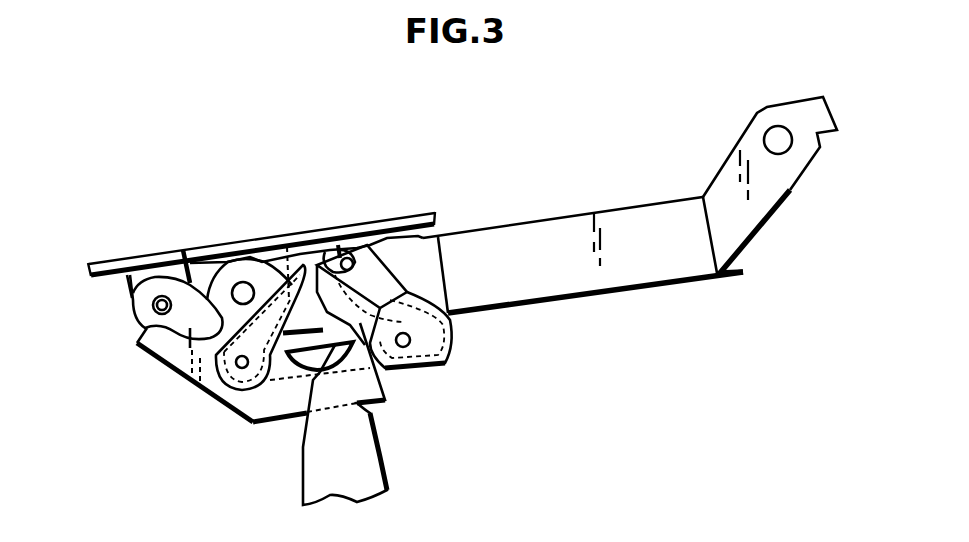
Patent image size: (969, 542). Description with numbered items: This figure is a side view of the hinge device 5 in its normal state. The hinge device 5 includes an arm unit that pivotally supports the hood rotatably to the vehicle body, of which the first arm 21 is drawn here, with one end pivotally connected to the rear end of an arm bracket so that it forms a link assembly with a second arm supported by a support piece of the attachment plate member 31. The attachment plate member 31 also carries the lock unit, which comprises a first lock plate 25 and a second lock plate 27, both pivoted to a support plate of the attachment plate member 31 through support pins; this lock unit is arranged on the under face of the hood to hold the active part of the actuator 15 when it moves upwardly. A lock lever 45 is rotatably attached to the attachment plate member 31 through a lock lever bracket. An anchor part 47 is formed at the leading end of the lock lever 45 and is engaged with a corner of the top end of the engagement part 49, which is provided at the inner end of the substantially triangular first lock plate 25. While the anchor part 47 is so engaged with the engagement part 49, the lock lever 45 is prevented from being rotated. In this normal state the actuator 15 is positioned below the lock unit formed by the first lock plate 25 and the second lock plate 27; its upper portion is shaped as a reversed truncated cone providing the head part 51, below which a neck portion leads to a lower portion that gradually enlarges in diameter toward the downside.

The hinge device 5 is at (497, 210).
The actuator 15 is at (383, 456).
The first arm 21 is at (632, 217).
The first lock plate 25 is at (443, 345).
The second lock plate 27 is at (142, 327).
The attachment plate member 31 is at (196, 246).
The lock lever 45 is at (177, 377).
The anchor part 47 is at (343, 257).
The engagement part 49 is at (367, 250).
The head part 51 is at (440, 287).